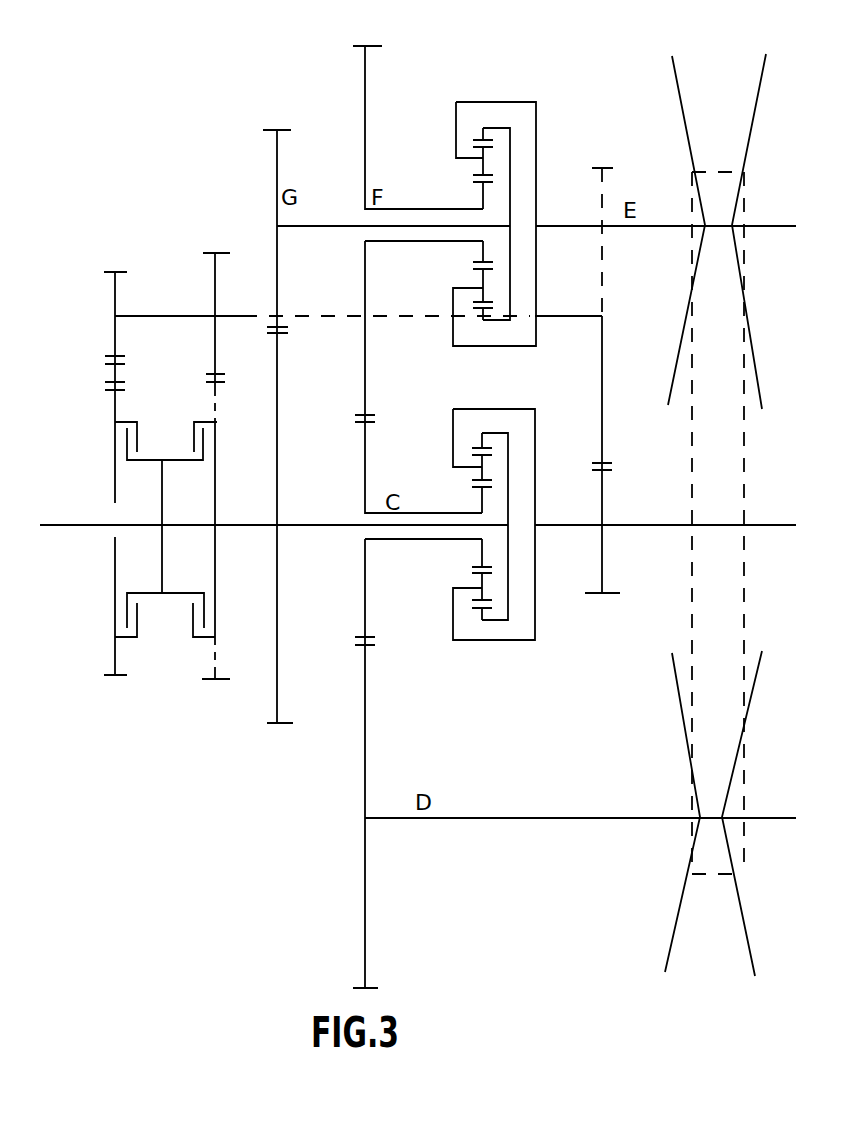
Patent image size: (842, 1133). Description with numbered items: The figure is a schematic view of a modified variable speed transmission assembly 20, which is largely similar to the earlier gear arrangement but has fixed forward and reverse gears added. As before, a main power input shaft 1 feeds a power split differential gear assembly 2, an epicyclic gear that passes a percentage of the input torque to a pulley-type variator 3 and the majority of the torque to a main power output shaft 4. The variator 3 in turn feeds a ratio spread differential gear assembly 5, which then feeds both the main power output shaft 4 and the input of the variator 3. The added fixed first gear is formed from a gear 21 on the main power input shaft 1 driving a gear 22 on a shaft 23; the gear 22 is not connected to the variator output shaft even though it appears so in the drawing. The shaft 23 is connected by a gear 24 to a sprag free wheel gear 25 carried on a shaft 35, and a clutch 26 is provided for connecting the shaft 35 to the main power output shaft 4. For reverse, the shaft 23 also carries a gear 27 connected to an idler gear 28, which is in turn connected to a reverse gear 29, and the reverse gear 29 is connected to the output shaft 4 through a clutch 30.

The main power input shaft 1 is at (776, 522).
The power split differential gear assembly 2 is at (537, 505).
The variator 3 is at (757, 148).
The main power output shaft 4 is at (56, 529).
The ratio spread differential gear assembly 5 is at (507, 102).
The variable speed transmission assembly 20 is at (460, 35).
The gear 21 is at (598, 606).
The gear 22 is at (604, 343).
The shaft 23 is at (292, 315).
The gear 24 is at (212, 271).
The sprag free wheel gear 25 is at (215, 690).
The clutch 26 is at (203, 430).
The gear 27 is at (112, 282).
The idler gear 28 is at (107, 372).
The reverse gear 29 is at (114, 448).
The clutch 30 is at (125, 622).
The shaft 35 is at (300, 522).